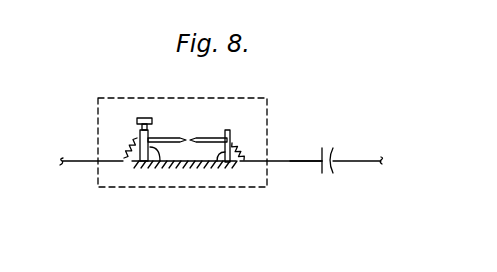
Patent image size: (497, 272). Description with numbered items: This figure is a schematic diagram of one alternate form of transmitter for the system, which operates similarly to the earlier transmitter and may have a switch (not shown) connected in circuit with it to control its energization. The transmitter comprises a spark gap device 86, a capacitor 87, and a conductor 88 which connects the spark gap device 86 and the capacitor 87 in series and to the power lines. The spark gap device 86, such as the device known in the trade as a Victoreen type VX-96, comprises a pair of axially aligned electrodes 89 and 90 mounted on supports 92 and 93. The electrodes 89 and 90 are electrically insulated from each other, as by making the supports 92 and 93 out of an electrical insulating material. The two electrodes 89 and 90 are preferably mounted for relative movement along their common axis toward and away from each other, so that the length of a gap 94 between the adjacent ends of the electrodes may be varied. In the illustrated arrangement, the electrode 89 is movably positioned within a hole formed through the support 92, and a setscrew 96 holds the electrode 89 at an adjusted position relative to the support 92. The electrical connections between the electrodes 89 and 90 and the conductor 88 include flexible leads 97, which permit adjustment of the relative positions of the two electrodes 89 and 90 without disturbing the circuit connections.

The spark gap device 86 is at (253, 117).
The capacitor 87 is at (333, 155).
The conductor 88 is at (303, 161).
The electrode 89 is at (165, 136).
The electrode 90 is at (208, 136).
The support 92 is at (158, 153).
The support 93 is at (214, 164).
The gap 94 is at (188, 140).
The setscrew 96 is at (140, 118).
The flexible leads 97 is at (125, 142).